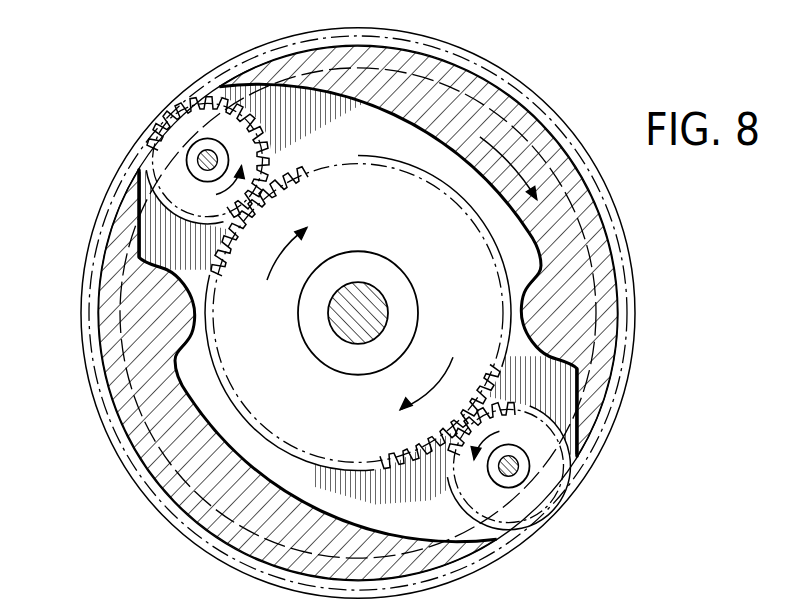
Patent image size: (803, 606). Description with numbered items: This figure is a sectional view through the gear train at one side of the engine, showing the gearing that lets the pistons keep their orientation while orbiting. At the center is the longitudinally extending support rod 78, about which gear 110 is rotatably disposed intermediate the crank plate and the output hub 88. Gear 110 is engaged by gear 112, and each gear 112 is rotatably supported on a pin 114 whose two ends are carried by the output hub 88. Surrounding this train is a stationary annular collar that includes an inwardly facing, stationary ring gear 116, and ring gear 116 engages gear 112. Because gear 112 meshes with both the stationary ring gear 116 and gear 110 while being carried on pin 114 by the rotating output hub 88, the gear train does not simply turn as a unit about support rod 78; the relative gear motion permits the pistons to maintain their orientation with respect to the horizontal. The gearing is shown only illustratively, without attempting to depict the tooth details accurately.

The support rod 78 is at (370, 300).
The output hub 88 is at (458, 89).
The gear 110 is at (358, 312).
The gear 112 is at (195, 118).
The pin 114 is at (198, 158).
The ring gear 116 is at (104, 196).